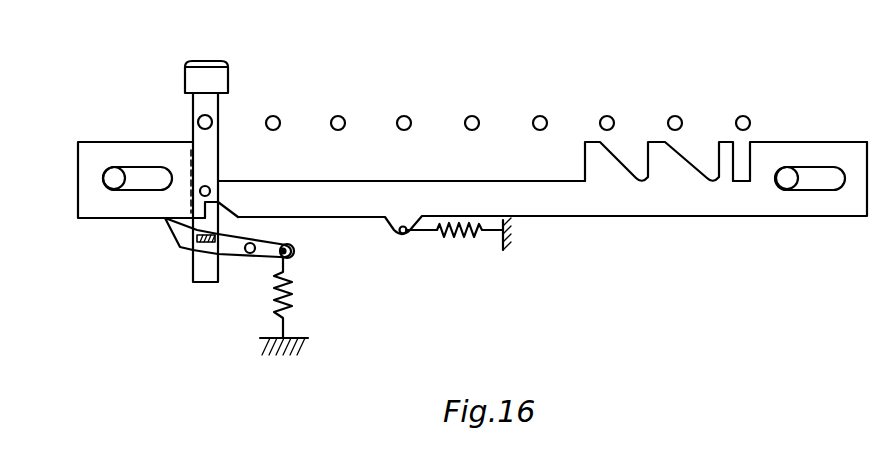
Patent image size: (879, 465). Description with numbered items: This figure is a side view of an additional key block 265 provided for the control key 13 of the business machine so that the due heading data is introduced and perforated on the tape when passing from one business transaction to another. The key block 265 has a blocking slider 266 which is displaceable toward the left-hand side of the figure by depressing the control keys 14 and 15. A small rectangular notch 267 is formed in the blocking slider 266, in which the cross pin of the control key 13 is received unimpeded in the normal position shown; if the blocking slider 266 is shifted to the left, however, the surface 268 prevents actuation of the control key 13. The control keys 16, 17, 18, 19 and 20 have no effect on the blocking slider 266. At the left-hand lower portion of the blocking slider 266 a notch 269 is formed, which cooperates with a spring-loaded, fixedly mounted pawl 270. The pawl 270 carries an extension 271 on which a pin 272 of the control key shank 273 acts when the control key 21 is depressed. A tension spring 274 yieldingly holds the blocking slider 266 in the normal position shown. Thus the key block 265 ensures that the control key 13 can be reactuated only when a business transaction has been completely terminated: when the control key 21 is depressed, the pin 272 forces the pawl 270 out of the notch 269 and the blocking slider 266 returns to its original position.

The control key 21 is at (228, 80).
The control key shank 273 is at (193, 127).
The control key 20 is at (278, 117).
The control key 19 is at (345, 117).
The control key 18 is at (408, 115).
The control key 17 is at (477, 115).
The control key 16 is at (542, 115).
The control key 15 is at (612, 115).
The control key 14 is at (680, 115).
The control key 13 is at (748, 115).
The surface 268 is at (818, 142).
The pin 272 is at (198, 191).
The extension 271 is at (197, 252).
The pawl 270 is at (237, 250).
The notch 269 is at (233, 210).
The tension spring 274 is at (463, 237).
The blocking slider 266 is at (566, 203).
The key block 265 is at (643, 217).
The rectangular notch 267 is at (744, 172).